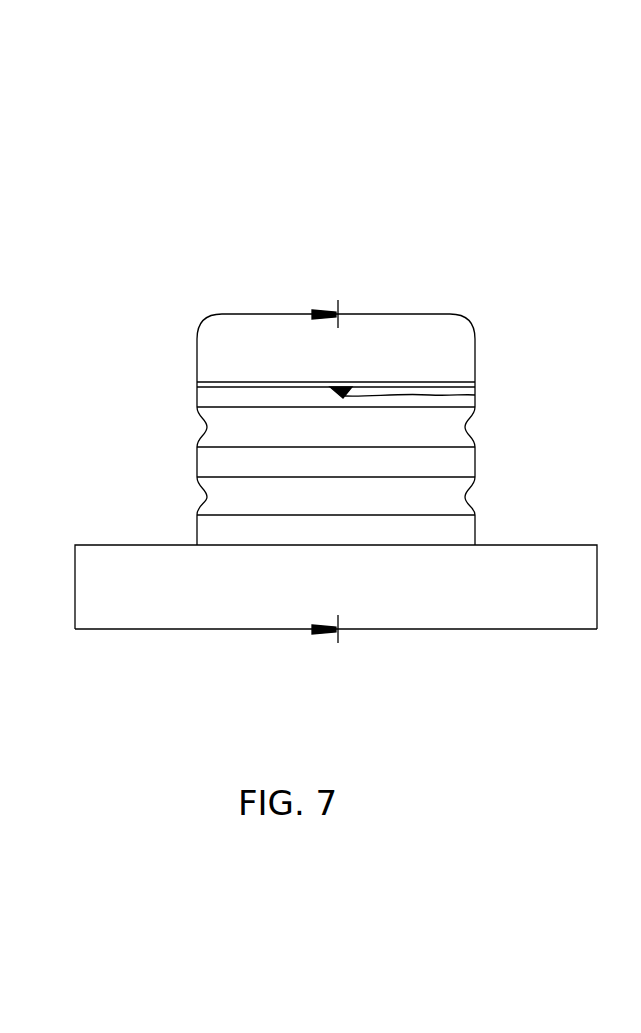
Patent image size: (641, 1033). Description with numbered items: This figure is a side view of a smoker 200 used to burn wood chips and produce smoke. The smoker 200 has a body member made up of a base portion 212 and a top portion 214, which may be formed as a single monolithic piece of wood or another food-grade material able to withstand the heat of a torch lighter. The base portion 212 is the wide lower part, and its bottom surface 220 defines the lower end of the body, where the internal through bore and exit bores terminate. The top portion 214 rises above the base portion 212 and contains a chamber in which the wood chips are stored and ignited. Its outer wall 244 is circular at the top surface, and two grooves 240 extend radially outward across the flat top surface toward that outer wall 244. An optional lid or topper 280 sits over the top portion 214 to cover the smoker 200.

The smoker 200 is at (115, 147).
The topper 280 is at (461, 314).
The outer wall 244 is at (197, 394).
The grooves 240 is at (475, 395).
The top portion 214 is at (457, 465).
The base portion 212 is at (525, 575).
The bottom surface 220 is at (475, 629).